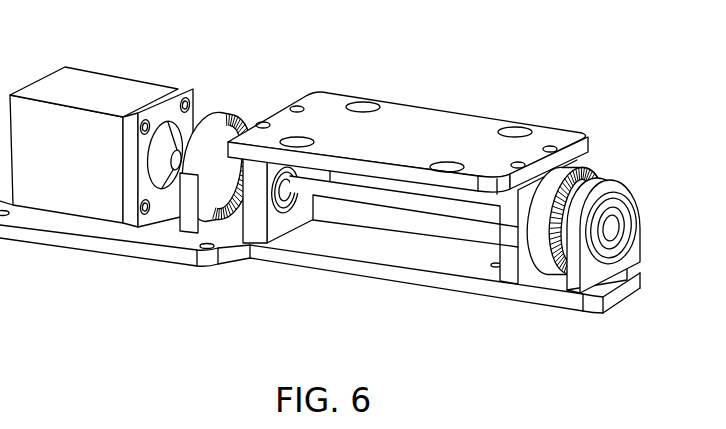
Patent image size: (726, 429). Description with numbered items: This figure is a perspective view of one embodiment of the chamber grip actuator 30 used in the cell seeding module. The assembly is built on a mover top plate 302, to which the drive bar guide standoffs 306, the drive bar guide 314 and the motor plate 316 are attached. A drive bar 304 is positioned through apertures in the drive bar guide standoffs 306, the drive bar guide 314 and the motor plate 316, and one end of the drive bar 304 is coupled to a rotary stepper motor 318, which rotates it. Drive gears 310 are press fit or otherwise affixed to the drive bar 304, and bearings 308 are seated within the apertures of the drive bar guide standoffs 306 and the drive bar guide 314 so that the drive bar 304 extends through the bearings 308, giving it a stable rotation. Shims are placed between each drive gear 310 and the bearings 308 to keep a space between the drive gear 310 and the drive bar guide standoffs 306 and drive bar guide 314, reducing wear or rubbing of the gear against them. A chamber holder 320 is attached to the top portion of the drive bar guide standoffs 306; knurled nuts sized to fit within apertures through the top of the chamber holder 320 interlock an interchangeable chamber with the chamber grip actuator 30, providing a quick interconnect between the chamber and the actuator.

The chamber grip actuator 30 is at (60, 279).
The mover top plate 302 is at (323, 236).
The drive bar 304 is at (393, 195).
The drive bar guide standoffs 306 is at (250, 224).
The bearings 308 is at (630, 220).
The drive gears 310 is at (587, 173).
The drive bar guide 314 is at (622, 188).
The motor plate 316 is at (172, 105).
The rotary stepper motor 318 is at (98, 82).
The chamber holder 320 is at (420, 113).